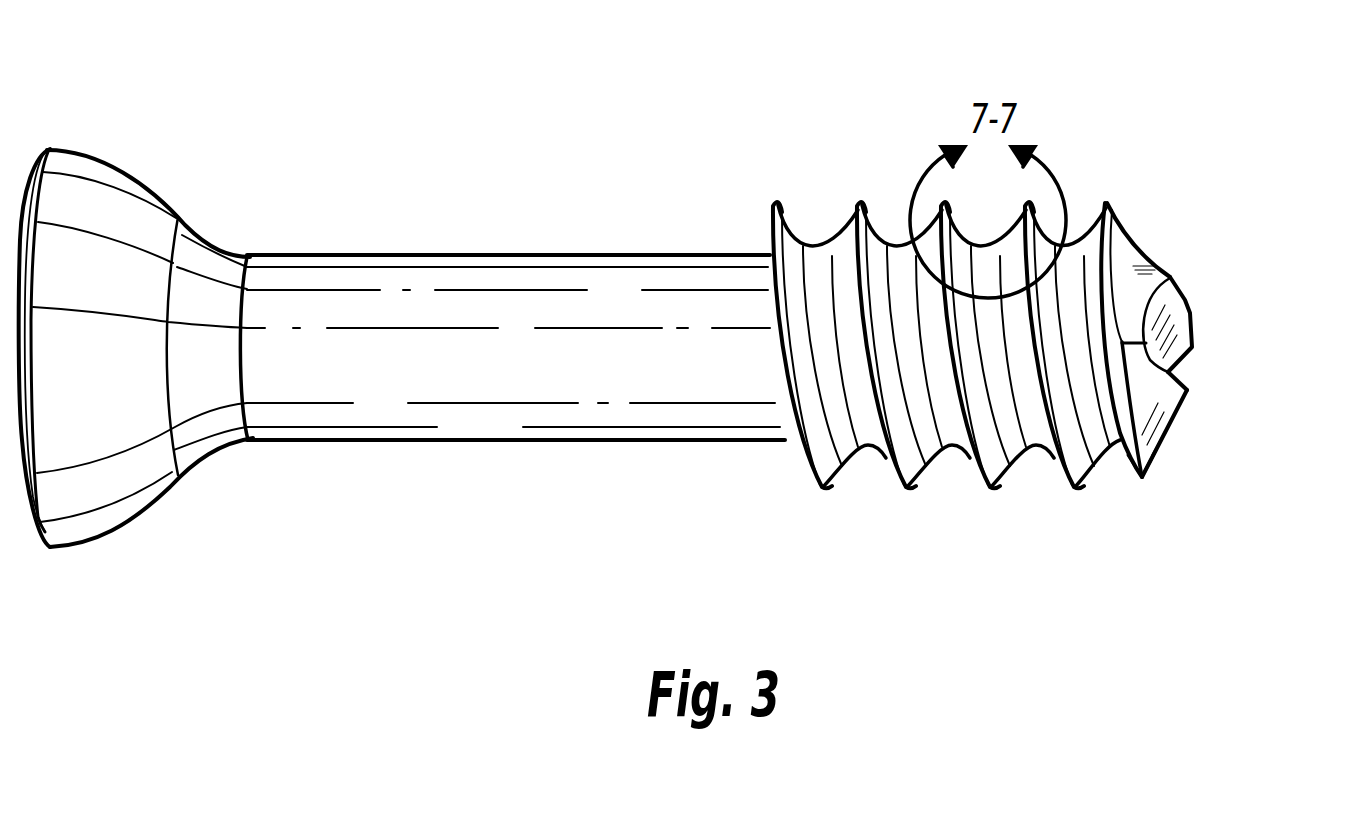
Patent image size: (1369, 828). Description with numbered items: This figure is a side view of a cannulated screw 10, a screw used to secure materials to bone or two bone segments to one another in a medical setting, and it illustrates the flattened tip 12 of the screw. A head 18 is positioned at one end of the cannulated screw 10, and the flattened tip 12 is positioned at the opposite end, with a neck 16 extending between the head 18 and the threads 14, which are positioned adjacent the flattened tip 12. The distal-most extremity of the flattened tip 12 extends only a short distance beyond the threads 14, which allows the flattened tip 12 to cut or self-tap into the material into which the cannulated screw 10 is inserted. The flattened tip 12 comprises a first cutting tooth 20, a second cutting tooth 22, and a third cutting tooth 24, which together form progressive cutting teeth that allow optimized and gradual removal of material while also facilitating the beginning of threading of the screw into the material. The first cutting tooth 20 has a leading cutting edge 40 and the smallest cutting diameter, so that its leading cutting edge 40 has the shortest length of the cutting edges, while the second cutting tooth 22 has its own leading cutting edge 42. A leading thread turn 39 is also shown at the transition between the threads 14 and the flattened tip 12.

The cannulated screw 10 is at (840, 170).
The flattened tip 12 is at (1175, 452).
The threads 14 is at (1078, 193).
The neck 16 is at (428, 265).
The head 18 is at (95, 165).
The first cutting tooth 20 is at (1197, 330).
The second cutting tooth 22 is at (1192, 405).
The third cutting tooth 24 is at (1172, 253).
The leading thread turn 39 is at (1120, 202).
The leading cutting edge 40 is at (1188, 297).
The leading cutting edge 42 is at (1183, 387).